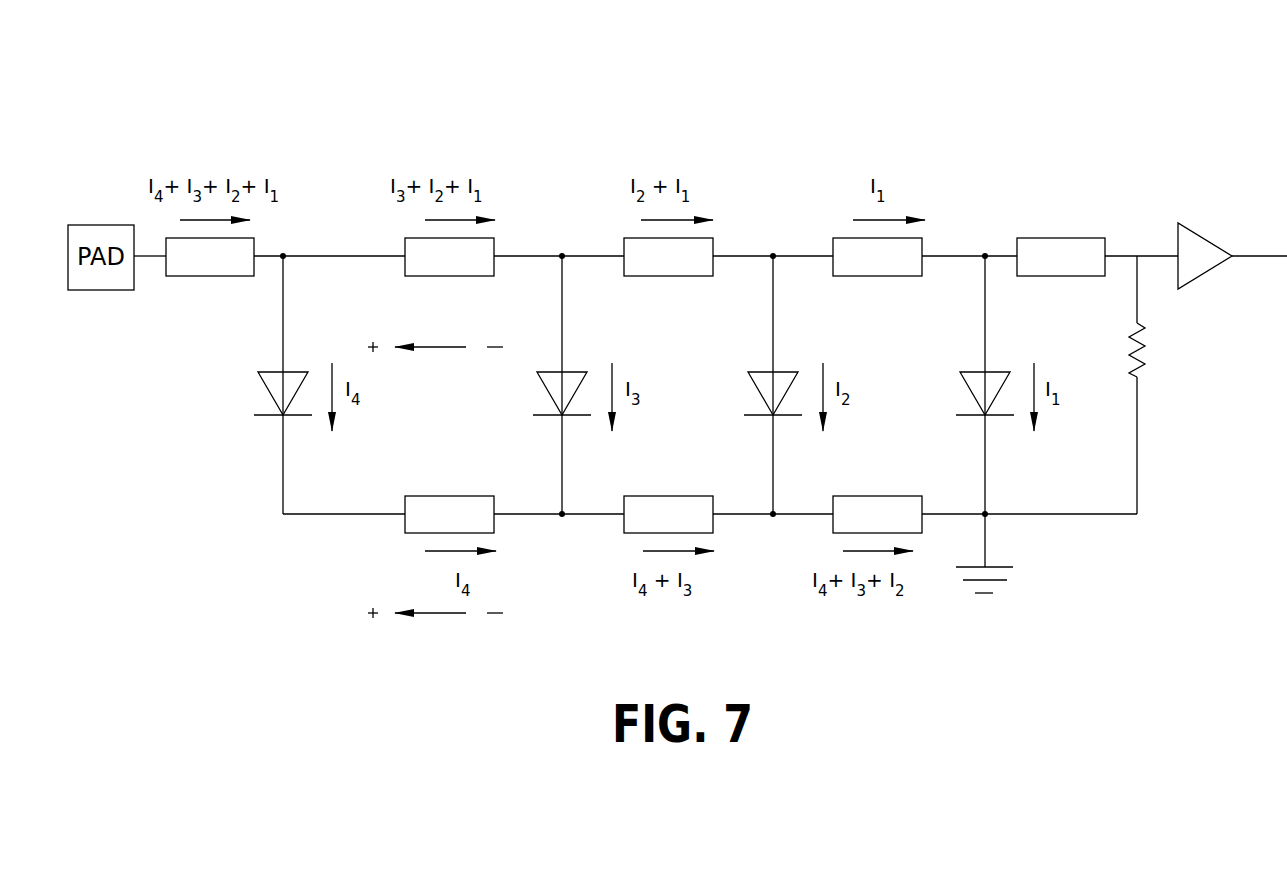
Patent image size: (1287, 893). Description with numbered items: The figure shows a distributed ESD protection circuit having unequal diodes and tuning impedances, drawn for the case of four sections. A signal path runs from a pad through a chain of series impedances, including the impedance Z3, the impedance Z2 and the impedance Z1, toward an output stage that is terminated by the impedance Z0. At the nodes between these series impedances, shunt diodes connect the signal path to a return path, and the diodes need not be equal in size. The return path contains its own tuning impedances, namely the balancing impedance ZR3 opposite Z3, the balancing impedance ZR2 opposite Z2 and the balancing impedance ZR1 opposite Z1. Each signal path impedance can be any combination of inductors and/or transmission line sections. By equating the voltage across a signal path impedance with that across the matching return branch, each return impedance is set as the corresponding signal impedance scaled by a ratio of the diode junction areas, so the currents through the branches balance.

The signal path impedance Z3 is at (449, 276).
The signal path impedance Z2 is at (668, 276).
The signal path impedance Z1 is at (877, 276).
The termination impedance Z0 is at (1155, 385).
The return path balancing impedance ZR3 is at (449, 496).
The return path balancing impedance ZR2 is at (668, 496).
The return path balancing impedance ZR1 is at (877, 496).